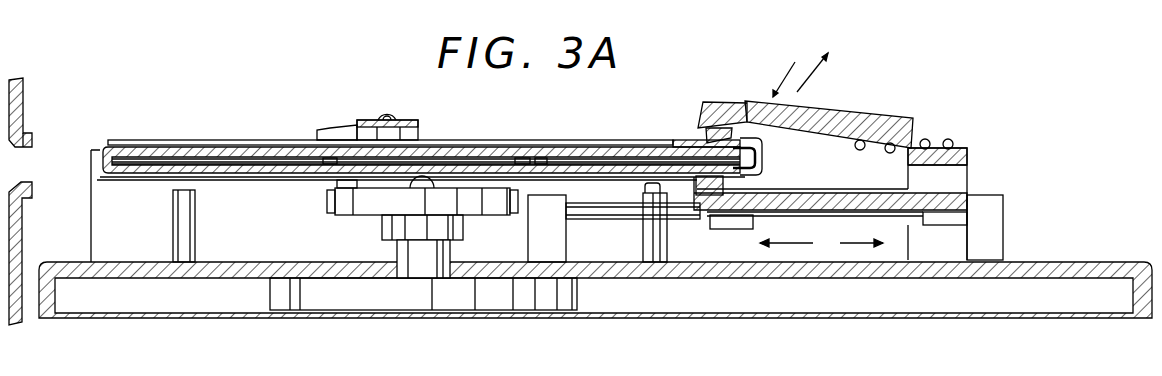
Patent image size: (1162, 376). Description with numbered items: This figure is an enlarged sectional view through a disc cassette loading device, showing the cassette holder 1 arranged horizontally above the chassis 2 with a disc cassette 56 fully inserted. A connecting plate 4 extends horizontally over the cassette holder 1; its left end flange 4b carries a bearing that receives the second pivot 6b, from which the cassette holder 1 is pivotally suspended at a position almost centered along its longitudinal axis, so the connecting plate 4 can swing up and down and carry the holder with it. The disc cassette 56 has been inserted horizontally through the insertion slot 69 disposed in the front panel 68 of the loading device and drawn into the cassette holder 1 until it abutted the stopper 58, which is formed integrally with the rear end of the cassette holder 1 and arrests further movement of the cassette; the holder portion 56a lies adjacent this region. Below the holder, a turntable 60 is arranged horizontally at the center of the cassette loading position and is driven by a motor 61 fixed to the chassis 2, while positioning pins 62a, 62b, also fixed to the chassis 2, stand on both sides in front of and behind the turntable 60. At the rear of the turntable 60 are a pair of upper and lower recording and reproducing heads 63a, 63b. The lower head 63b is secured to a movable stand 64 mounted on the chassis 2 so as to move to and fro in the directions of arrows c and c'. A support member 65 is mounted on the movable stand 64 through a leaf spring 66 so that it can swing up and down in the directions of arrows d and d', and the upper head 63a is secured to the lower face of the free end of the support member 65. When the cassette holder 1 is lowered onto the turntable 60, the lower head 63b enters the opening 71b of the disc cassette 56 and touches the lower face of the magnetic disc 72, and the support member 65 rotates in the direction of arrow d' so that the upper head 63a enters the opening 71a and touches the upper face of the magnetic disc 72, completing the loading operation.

The cassette holder 1 is at (453, 140).
The chassis 2 is at (1063, 268).
The connecting plate 4 is at (410, 118).
The left end flange 4b is at (332, 132).
The second pivot 6b is at (382, 108).
The disc cassette 56 is at (222, 150).
The holder frame 56a is at (768, 186).
The stopper 58 is at (760, 160).
The turntable 60 is at (348, 207).
The motor 61 is at (423, 305).
The positioning pin 62a is at (180, 260).
The positioning pin 62b is at (655, 262).
The upper recording and reproducing head 63a is at (713, 108).
The lower recording and reproducing head 63b is at (708, 195).
The movable stand 64 is at (898, 212).
The support member 65 is at (842, 125).
The leaf spring 66 is at (940, 145).
The front panel 68 is at (17, 107).
The insertion slot 69 is at (18, 157).
The opening 71a is at (628, 158).
The opening 71b is at (613, 161).
The magnetic disc 72 is at (588, 147).
The arrow c is at (786, 299).
The arrow c' is at (861, 301).
The arrow d is at (830, 72).
The arrow d' is at (771, 67).